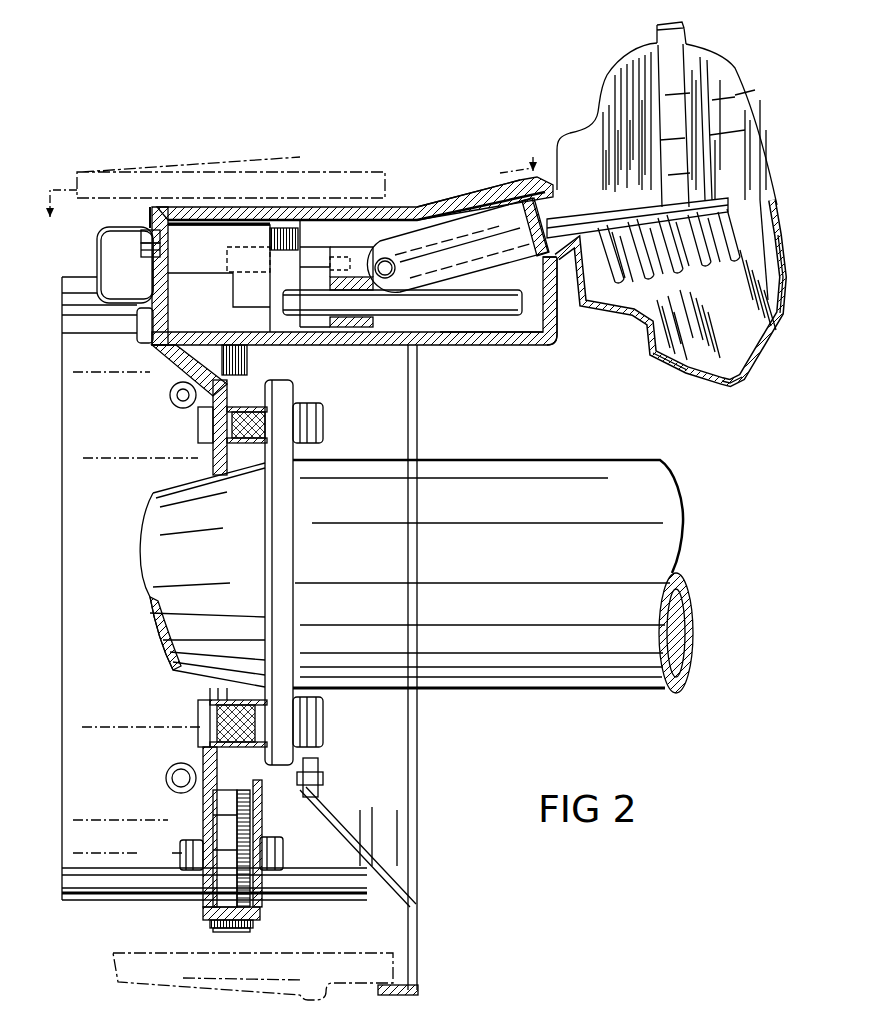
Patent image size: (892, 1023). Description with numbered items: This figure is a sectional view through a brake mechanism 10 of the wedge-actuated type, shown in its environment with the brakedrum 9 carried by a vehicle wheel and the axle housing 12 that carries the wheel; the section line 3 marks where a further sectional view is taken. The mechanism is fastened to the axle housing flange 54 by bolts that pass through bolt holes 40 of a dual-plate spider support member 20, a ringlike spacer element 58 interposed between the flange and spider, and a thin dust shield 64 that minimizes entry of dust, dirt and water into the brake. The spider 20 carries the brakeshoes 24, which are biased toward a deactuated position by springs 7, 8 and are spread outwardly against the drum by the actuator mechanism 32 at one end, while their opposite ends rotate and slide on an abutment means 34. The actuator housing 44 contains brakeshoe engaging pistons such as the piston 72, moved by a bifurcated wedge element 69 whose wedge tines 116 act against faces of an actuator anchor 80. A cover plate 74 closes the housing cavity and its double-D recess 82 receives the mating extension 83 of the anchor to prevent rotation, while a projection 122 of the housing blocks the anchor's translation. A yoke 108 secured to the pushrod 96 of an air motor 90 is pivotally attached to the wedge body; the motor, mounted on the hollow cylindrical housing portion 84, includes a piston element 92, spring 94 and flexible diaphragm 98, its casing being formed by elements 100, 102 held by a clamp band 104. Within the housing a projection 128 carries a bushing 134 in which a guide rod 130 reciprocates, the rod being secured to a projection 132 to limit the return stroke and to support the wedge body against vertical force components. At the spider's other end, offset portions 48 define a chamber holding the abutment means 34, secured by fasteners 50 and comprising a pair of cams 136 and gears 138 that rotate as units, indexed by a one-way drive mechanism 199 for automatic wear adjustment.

The section line 3- 3 is at (293, 189).
The spring 7 is at (171, 396).
The spring 8 is at (166, 776).
The brakedrum 9 is at (318, 172).
The brake mechanism 10 is at (431, 139).
The axle housing 12 is at (510, 459).
The spider support member 20 is at (207, 752).
The brakeshoes 24 is at (397, 385).
The actuator mechanism 32 is at (446, 177).
The abutment means 34 is at (211, 929).
The bolt holes 40 is at (229, 447).
The housing 44 is at (200, 207).
The offset portions 48 is at (203, 917).
The fasteners 50 is at (184, 855).
The axle housing flange 54 is at (291, 481).
The spacer element 58 is at (256, 401).
The dust shield 64 is at (322, 797).
The wedge element 69 is at (356, 242).
The piston 72 is at (247, 362).
The cover plate 74 is at (153, 215).
The actuator anchor 80 is at (211, 262).
The recess 82 is at (141, 252).
The extension 83 is at (141, 238).
The cylindrical housing portion 84 is at (525, 334).
The air motor 90 is at (737, 44).
The piston element 92 is at (762, 285).
The spring 94 is at (701, 270).
The pushrod 96 is at (641, 234).
The flexible diaphragm 98 is at (780, 300).
The motor housing element 100 is at (779, 324).
The motor housing element 102 is at (664, 362).
The clamp band 104 is at (740, 381).
The yoke 108 is at (461, 247).
The wedge tines 116 is at (310, 253).
The projection 122 is at (287, 220).
The projection 128 is at (395, 277).
The guide rod 130 is at (512, 333).
The projection 132 is at (373, 327).
The bushing 134 is at (447, 288).
The cams 136 is at (215, 820).
The gears 138 is at (258, 818).
The one-way drive mechanism 199 is at (239, 931).